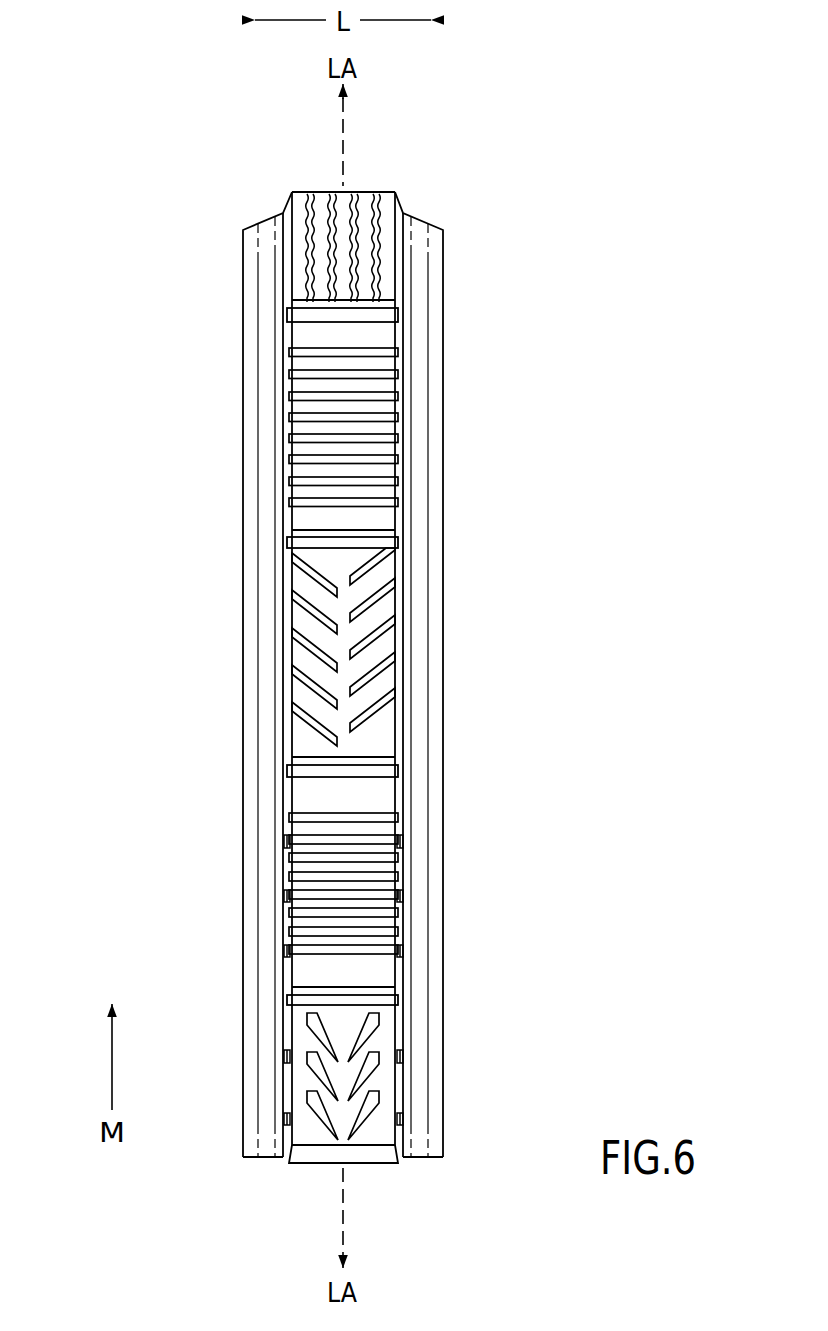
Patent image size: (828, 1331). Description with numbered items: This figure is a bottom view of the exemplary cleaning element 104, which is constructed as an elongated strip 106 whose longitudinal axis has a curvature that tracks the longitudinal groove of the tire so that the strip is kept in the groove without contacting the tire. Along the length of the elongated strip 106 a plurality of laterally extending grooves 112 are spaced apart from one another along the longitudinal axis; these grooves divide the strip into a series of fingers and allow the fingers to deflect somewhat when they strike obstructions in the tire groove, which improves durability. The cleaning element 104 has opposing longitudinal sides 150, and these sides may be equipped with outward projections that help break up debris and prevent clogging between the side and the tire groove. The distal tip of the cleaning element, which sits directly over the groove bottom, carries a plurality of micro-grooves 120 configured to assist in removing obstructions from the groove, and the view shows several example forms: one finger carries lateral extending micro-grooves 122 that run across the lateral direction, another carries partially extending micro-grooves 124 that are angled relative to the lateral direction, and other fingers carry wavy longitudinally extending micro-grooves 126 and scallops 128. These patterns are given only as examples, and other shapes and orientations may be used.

The cleaning element 104 is at (153, 468).
The elongated strip 106 is at (262, 238).
The laterally extending grooves 112 is at (407, 316).
The micro-grooves 120 is at (326, 180).
The lateral extending micro-grooves 122 is at (285, 372).
The partially extending micro-grooves 124 is at (401, 620).
The wavy longitudinally extending micro-grooves 126 is at (371, 180).
The scallops 128 is at (307, 1096).
The longitudinal sides 150 is at (407, 1093).